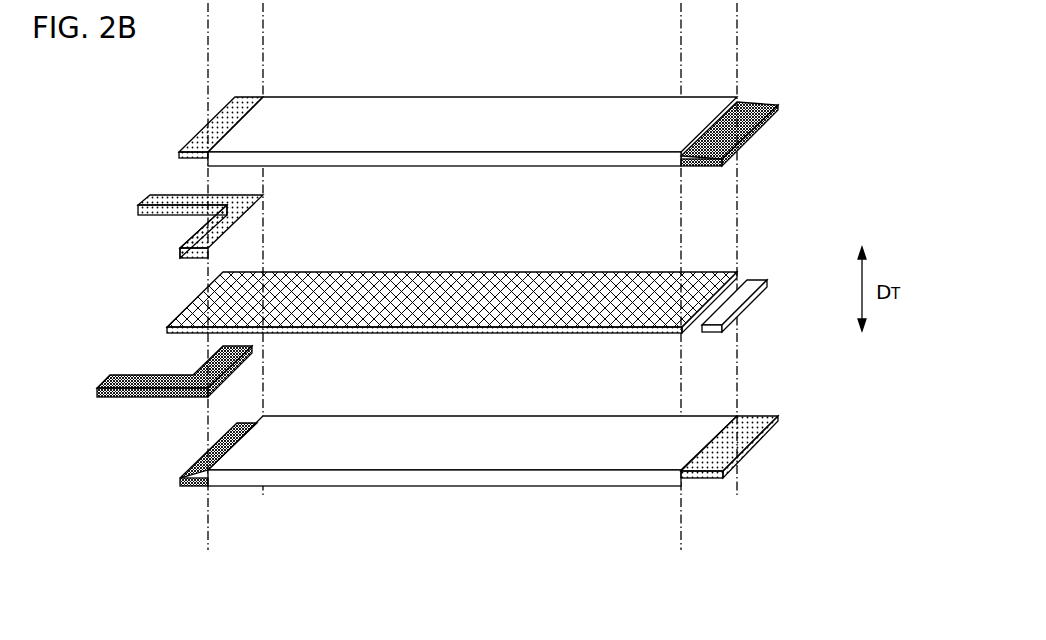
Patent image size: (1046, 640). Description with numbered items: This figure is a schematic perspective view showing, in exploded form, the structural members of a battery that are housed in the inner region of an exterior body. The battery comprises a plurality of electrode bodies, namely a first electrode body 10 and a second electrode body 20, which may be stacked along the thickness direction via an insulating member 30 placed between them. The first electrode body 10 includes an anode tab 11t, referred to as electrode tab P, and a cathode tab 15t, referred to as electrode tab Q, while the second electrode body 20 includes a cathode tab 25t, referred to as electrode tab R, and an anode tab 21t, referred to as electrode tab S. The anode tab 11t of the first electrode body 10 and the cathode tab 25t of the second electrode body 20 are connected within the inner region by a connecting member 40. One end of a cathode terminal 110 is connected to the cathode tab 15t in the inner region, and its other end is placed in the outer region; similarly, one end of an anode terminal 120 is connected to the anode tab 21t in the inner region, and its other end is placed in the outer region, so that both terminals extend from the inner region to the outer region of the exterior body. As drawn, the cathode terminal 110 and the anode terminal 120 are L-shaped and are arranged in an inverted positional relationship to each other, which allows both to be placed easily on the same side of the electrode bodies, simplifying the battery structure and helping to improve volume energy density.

The first electrode body 10 is at (553, 79).
The second electrode body 20 is at (553, 401).
The insulating member 30 is at (553, 255).
The connecting member 40 is at (753, 298).
The cathode terminal 110 is at (150, 194).
The anode terminal 120 is at (112, 376).
The cathode tab 15t is at (230, 97).
The anode tab 11t is at (763, 105).
The anode tab 21t is at (190, 486).
The cathode tab 25t is at (712, 479).